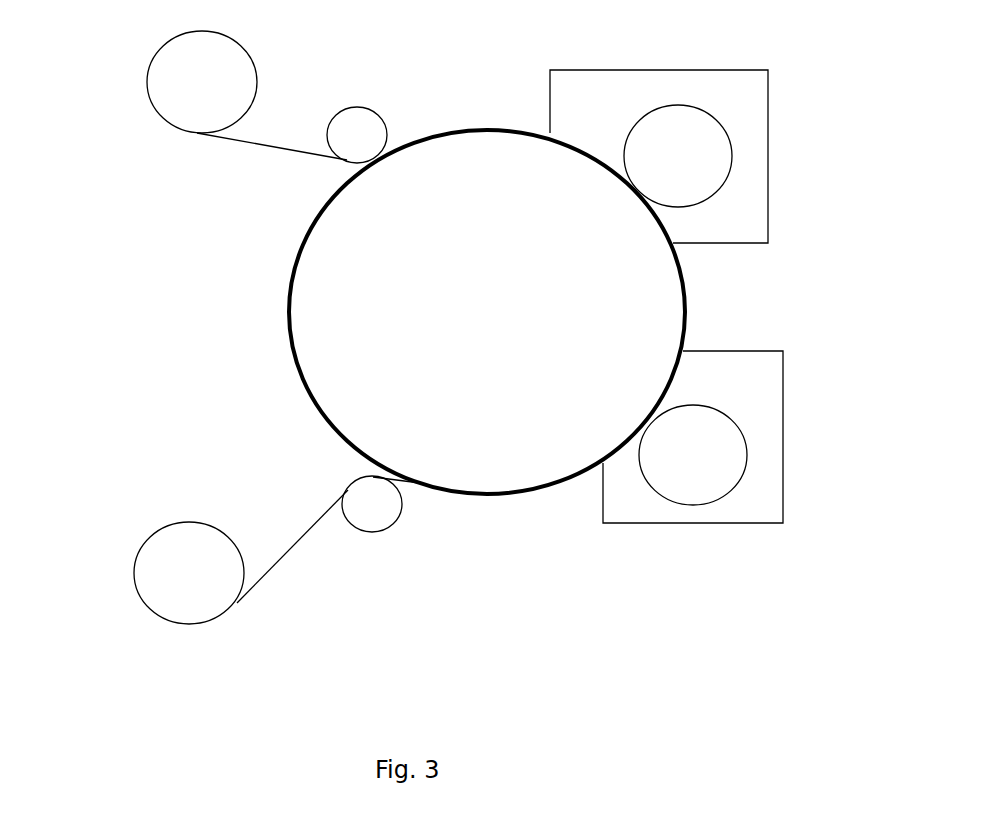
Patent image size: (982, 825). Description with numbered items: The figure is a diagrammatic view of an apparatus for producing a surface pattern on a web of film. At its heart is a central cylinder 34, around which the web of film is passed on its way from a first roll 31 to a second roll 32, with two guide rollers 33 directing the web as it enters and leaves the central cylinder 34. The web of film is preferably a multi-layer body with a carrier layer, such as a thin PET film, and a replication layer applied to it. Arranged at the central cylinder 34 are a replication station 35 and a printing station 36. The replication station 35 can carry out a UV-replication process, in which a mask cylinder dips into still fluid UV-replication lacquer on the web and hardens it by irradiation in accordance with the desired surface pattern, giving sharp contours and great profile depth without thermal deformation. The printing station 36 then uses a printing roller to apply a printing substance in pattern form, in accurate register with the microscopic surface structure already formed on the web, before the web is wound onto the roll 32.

The roll 31 is at (145, 575).
The roll 32 is at (163, 72).
The guide rollers 33 is at (363, 115).
The central cylinder 34 is at (303, 273).
The replication station 35 is at (765, 445).
The printing station 36 is at (753, 115).